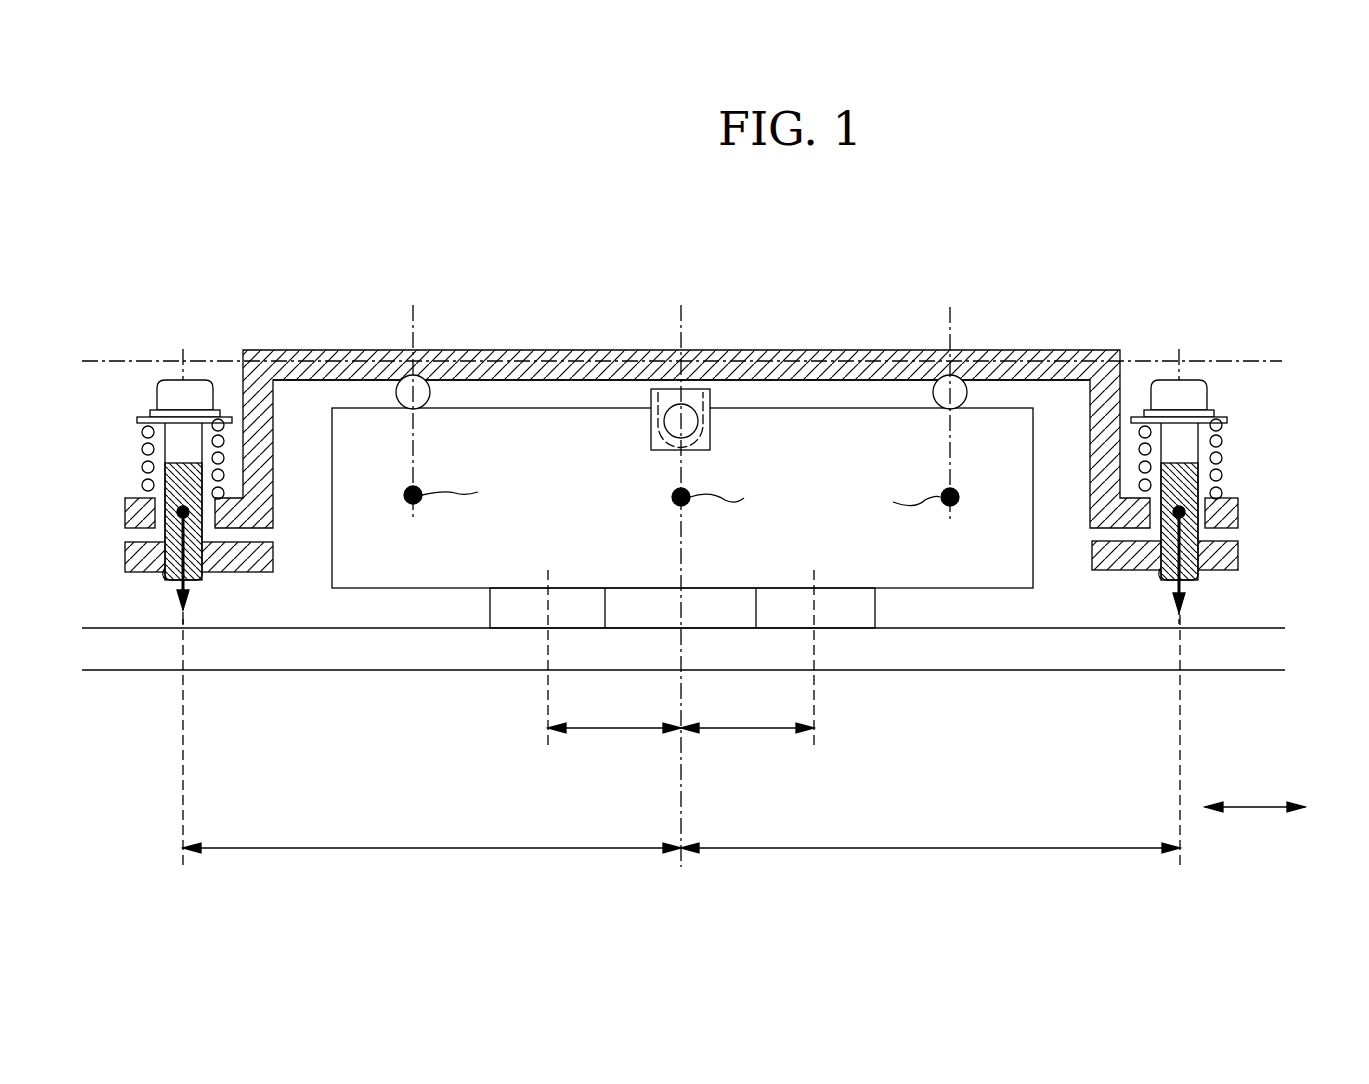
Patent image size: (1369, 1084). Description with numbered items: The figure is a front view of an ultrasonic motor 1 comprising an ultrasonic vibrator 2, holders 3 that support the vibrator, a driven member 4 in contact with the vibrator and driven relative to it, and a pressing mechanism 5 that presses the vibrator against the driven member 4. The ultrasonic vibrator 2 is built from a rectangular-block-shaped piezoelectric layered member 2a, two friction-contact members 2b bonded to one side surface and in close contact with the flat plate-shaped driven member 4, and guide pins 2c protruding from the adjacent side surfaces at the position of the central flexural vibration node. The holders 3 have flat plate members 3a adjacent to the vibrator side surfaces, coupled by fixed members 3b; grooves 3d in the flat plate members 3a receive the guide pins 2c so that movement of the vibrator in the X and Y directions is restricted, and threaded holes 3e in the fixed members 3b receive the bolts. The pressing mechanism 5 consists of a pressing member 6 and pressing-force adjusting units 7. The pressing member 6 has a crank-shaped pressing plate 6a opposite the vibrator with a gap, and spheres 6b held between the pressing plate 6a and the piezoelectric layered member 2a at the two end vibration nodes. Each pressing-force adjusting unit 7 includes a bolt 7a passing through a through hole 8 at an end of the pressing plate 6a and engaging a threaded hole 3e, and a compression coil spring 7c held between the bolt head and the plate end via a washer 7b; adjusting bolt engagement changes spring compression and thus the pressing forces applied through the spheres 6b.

The ultrasonic motor 1 is at (950, 207).
The ultrasonic vibrator 2 is at (701, 584).
The piezoelectric layered member 2a is at (1035, 575).
The friction-contact members 2b is at (490, 608).
The guide pins 2c is at (700, 432).
The holders 3 is at (1322, 312).
The flat plate members 3a is at (1262, 358).
The fixed members 3b is at (274, 552).
The grooves 3d is at (668, 398).
The threaded holes 3e is at (168, 570).
The driven member 4 is at (1265, 627).
The pressing mechanism 5 is at (179, 302).
The pressing member 6 is at (740, 347).
The pressing plate 6a is at (1052, 350).
The spheres 6b is at (430, 393).
The pressing-force adjusting units 7 is at (102, 405).
The bolts 7a is at (168, 380).
The washers 7b is at (224, 417).
The compression coil springs 7c is at (142, 440).
The through holes 8 is at (150, 503).